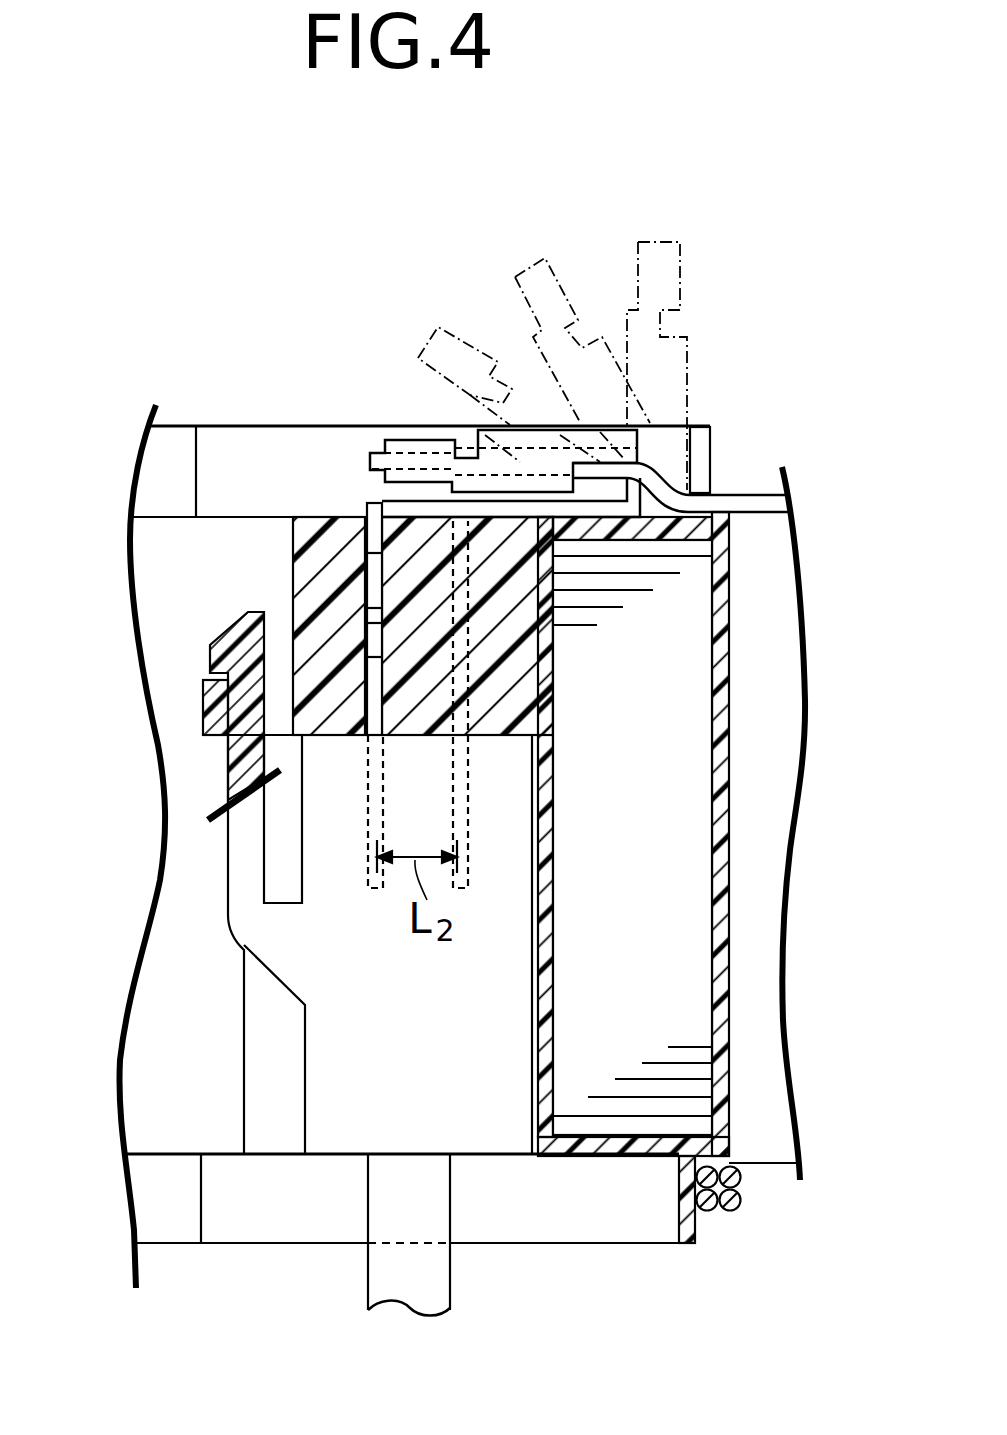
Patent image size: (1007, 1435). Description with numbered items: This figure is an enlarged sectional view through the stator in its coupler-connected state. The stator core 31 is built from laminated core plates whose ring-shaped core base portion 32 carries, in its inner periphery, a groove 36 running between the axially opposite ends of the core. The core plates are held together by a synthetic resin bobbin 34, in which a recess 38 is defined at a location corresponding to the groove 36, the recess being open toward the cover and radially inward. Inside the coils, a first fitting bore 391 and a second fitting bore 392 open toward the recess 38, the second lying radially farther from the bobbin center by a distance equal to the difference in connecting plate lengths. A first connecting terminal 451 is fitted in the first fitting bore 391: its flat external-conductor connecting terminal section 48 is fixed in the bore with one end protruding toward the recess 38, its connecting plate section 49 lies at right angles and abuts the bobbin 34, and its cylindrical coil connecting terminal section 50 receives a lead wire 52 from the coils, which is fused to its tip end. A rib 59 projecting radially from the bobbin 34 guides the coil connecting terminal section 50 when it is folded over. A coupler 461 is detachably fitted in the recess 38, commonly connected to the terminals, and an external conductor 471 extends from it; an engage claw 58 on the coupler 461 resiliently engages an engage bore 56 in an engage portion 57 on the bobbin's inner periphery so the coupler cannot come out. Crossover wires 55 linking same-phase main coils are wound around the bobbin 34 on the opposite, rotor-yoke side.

The stator core 31 is at (610, 862).
The core base portion 32 is at (672, 1016).
The bobbin 34 is at (320, 530).
The groove 36 is at (538, 928).
The recess 38 is at (535, 1088).
The first fitting bore 391 is at (374, 705).
The second fitting bore 392 is at (470, 748).
The first connecting terminal 451 is at (411, 432).
The coupler 461 is at (432, 1058).
The external conductor 471 is at (378, 1265).
The external-conductor connecting terminal section 48 is at (368, 605).
The connecting plate section 49 is at (500, 513).
The coil connecting terminal section 50 is at (509, 432).
The lead wire 52 is at (737, 493).
The crossover wire 55 is at (708, 1203).
The engage bore 56 is at (230, 716).
The engage portion 57 is at (203, 687).
The engage claw 58 is at (220, 648).
The rib 59 is at (327, 437).